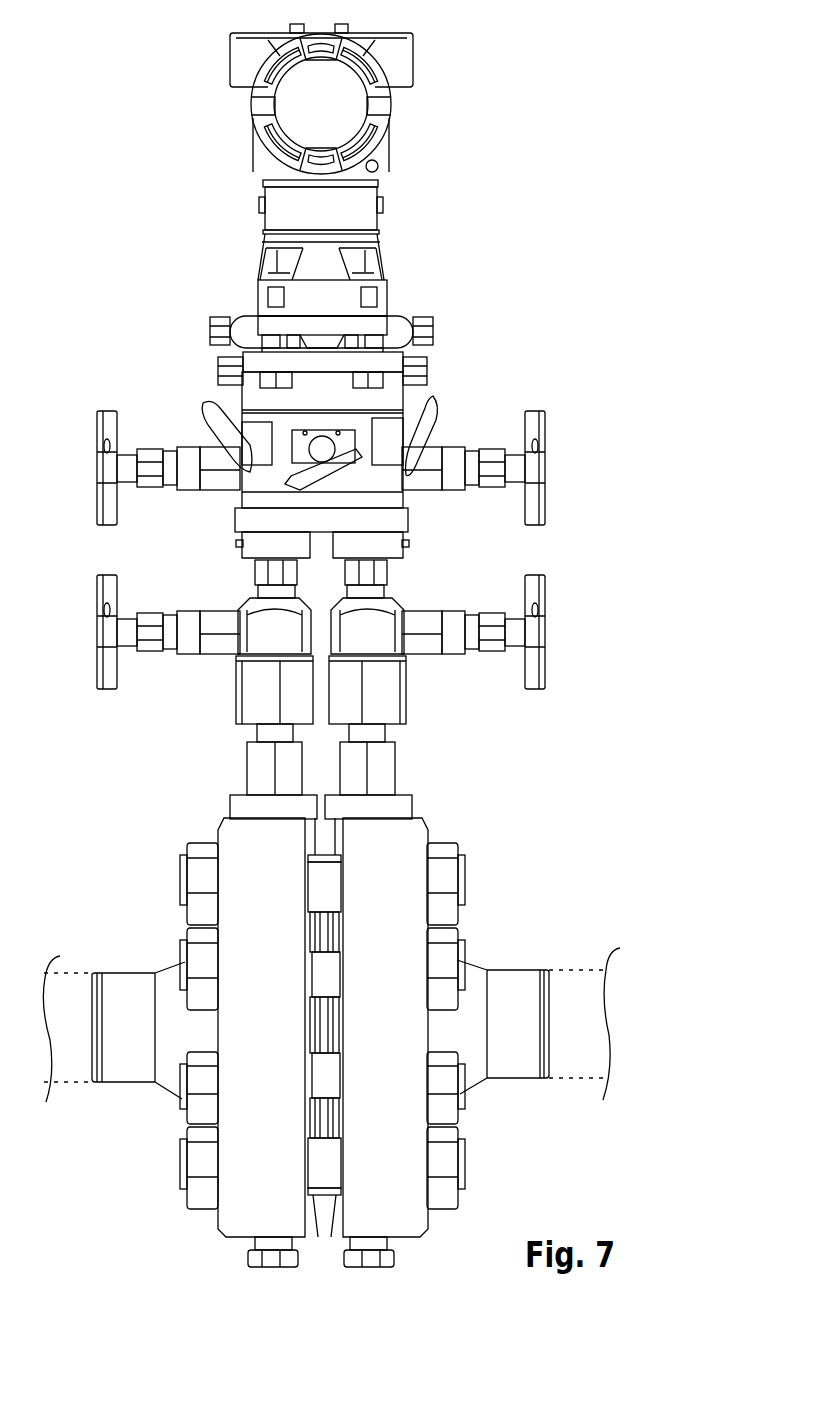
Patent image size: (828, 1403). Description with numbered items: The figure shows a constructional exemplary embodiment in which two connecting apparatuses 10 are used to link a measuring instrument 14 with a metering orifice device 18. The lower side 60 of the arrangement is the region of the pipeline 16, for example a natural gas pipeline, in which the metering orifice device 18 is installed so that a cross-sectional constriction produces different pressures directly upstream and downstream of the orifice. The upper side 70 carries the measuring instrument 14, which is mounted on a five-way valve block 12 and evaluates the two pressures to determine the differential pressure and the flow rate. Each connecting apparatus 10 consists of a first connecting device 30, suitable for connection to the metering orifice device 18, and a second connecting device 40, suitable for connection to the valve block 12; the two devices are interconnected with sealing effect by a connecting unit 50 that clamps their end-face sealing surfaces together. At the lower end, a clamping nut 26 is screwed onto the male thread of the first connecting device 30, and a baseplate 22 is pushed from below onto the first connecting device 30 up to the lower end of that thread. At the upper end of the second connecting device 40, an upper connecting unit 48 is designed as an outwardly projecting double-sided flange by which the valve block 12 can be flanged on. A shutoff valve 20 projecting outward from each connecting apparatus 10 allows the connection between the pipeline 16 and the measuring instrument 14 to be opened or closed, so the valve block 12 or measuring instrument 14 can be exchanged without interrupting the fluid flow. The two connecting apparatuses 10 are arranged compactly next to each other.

The connecting apparatus 10 is at (233, 719).
The valve block 12 is at (441, 416).
The measuring instrument 14 is at (395, 140).
The pipeline 16 is at (78, 1068).
The metering orifice device 18 is at (463, 858).
The shutoff valve 20 is at (98, 610).
The baseplate 22 is at (253, 813).
The clamping nut 26 is at (255, 773).
The first connecting device 30 is at (257, 735).
The second connecting device 40 is at (252, 580).
The upper connecting unit 48 is at (243, 544).
The connecting unit 50 is at (250, 682).
The lower side 60 is at (722, 982).
The upper side 70 is at (690, 174).